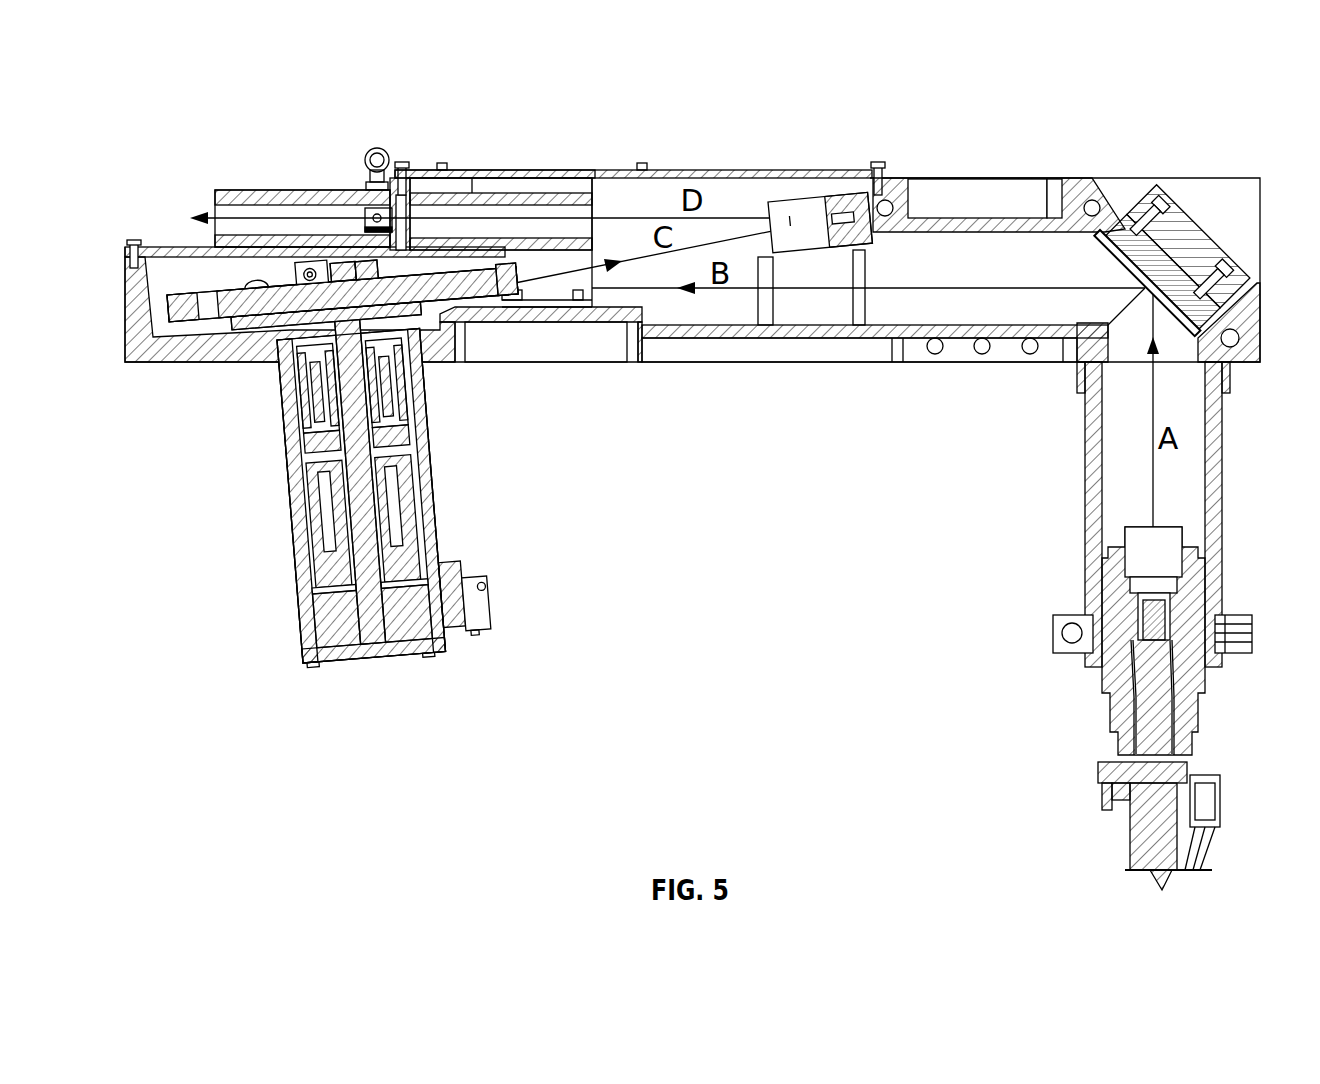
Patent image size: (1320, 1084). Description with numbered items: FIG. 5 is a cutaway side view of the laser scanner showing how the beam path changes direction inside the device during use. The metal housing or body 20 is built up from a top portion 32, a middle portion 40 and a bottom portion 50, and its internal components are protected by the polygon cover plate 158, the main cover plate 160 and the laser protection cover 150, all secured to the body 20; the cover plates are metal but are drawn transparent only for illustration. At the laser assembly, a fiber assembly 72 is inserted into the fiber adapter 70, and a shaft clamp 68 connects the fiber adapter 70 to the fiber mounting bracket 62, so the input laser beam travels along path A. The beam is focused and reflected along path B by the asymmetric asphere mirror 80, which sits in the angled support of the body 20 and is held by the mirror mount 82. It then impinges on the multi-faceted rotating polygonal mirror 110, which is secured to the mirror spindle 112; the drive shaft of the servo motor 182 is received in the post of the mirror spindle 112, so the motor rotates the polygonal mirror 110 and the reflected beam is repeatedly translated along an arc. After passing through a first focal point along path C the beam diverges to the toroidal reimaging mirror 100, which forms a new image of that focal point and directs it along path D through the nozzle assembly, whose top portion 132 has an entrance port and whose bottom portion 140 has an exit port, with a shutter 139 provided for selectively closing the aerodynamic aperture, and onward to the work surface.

The body 20 is at (979, 176).
The top portion 32 is at (965, 364).
The middle portion 40 is at (773, 364).
The bottom portion 50 is at (123, 297).
The fiber mounting bracket 62 is at (1224, 553).
The shaft clamp 68 is at (1252, 632).
The fiber adapter 70 is at (1208, 683).
The fiber assembly 72 is at (1190, 765).
The asymmetric asphere mirror 80 is at (1127, 222).
The mirror mount 82 is at (1193, 218).
The toroidal reimaging mirror 100 is at (838, 196).
The multi-faceted rotating polygonal mirror 110 is at (225, 315).
The mirror spindle 112 is at (245, 330).
The top portion 132 is at (498, 192).
The shutter 139 is at (393, 195).
The bottom portion 140 is at (272, 190).
The laser protection cover 150 is at (580, 170).
The polygon cover plate 158 is at (149, 248).
The main cover plate 160 is at (700, 170).
The servo motor 182 is at (372, 657).